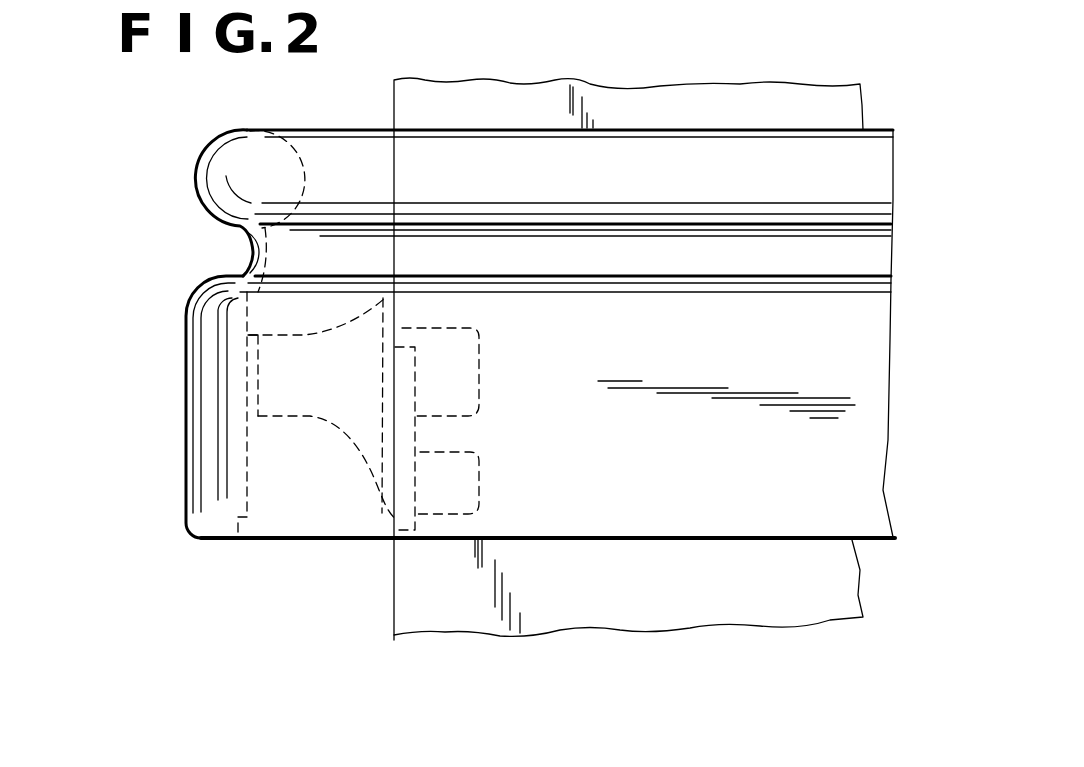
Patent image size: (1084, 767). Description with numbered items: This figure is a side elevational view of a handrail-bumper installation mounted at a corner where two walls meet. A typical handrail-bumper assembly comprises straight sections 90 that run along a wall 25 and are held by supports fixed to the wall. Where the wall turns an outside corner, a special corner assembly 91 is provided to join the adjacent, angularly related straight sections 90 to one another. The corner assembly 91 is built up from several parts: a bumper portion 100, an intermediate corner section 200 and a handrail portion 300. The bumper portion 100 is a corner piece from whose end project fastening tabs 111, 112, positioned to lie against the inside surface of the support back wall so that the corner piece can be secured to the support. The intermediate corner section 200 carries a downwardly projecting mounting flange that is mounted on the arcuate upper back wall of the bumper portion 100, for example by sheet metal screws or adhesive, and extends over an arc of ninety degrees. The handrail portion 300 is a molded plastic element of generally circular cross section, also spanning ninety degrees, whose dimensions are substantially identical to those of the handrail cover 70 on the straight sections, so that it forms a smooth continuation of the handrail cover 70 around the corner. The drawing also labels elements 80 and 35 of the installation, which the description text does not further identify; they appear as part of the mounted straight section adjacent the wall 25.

The wall 25 is at (490, 108).
The handrail cover 70 is at (702, 153).
The intermediate wall 80 is at (790, 248).
The straight section 90 is at (758, 479).
The bottom edge 35 is at (643, 512).
The handrail portion 300 is at (333, 168).
The intermediate corner section 200 is at (337, 253).
The bumper portion 100 is at (273, 507).
The corner assembly 91 is at (310, 487).
The fastening tab 111 is at (480, 387).
The fastening tab 112 is at (478, 487).